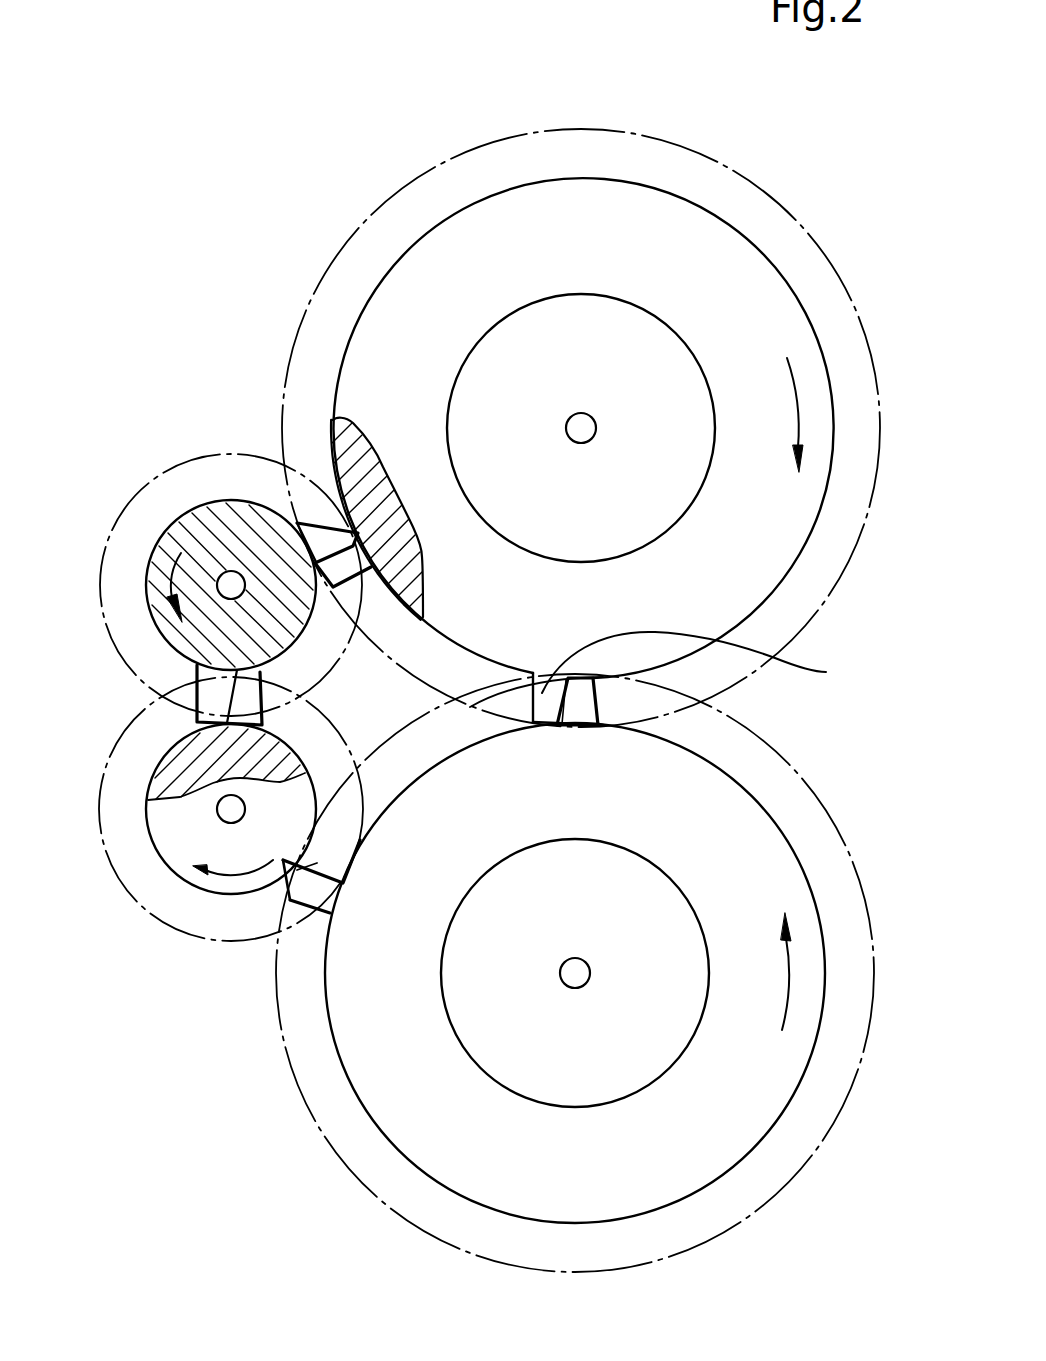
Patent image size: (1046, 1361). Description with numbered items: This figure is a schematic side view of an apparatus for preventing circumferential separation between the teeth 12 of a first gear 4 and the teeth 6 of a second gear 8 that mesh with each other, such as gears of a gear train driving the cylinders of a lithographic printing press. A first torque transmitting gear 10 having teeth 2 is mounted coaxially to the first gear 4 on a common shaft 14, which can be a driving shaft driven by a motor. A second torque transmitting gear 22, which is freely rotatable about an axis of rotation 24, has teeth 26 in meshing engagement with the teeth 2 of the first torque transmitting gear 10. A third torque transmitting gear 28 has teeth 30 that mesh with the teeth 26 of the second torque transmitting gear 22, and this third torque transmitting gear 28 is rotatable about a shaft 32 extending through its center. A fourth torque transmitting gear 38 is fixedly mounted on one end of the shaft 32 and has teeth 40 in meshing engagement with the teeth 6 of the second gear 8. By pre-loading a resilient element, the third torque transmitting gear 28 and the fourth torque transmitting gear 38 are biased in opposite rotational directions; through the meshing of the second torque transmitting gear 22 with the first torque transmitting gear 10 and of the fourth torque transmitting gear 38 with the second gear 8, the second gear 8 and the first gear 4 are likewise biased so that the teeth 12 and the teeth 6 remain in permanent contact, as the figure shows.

The teeth 2 is at (333, 480).
The first gear 4 is at (760, 277).
The teeth 6 is at (583, 705).
The second gear 8 is at (724, 1117).
The first torque transmitting gear 10 is at (337, 477).
The teeth 12 is at (666, 669).
The common shaft 14 is at (592, 417).
The second torque transmitting gear 22 is at (210, 535).
The axis of rotation 24 is at (181, 553).
The teeth 26 is at (298, 505).
The third torque transmitting gear 28 is at (185, 766).
The teeth 30 is at (200, 740).
The shaft 32 is at (217, 812).
The fourth torque transmitting gear 38 is at (180, 850).
The teeth 40 is at (285, 872).